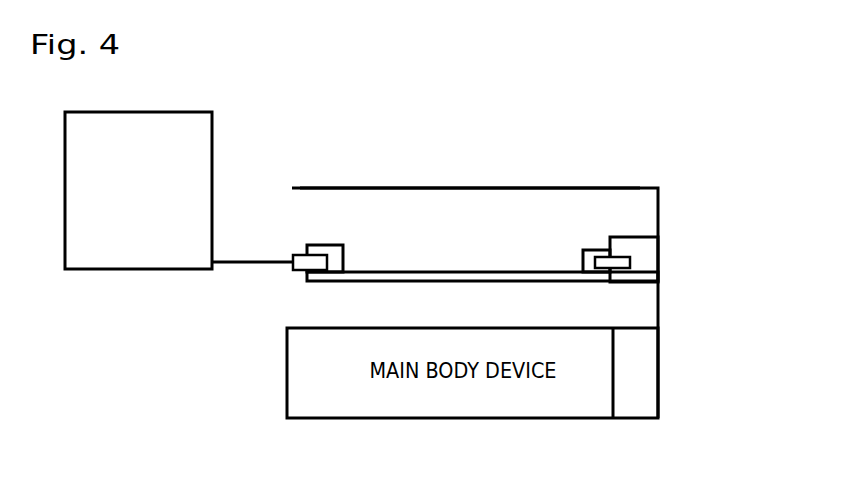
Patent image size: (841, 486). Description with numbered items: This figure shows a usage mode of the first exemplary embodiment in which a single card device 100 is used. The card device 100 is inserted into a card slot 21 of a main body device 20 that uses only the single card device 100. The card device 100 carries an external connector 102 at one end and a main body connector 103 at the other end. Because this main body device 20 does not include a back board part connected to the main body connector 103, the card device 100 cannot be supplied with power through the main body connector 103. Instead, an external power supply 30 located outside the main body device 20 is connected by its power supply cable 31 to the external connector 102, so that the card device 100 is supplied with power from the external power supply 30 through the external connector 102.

The main body device 20 is at (488, 162).
The card slot 21 is at (520, 190).
The external power supply 30 is at (213, 146).
The power supply cable 31 is at (242, 262).
The card device 100 is at (448, 256).
The external connector 102 is at (300, 256).
The main body connector 103 is at (632, 262).